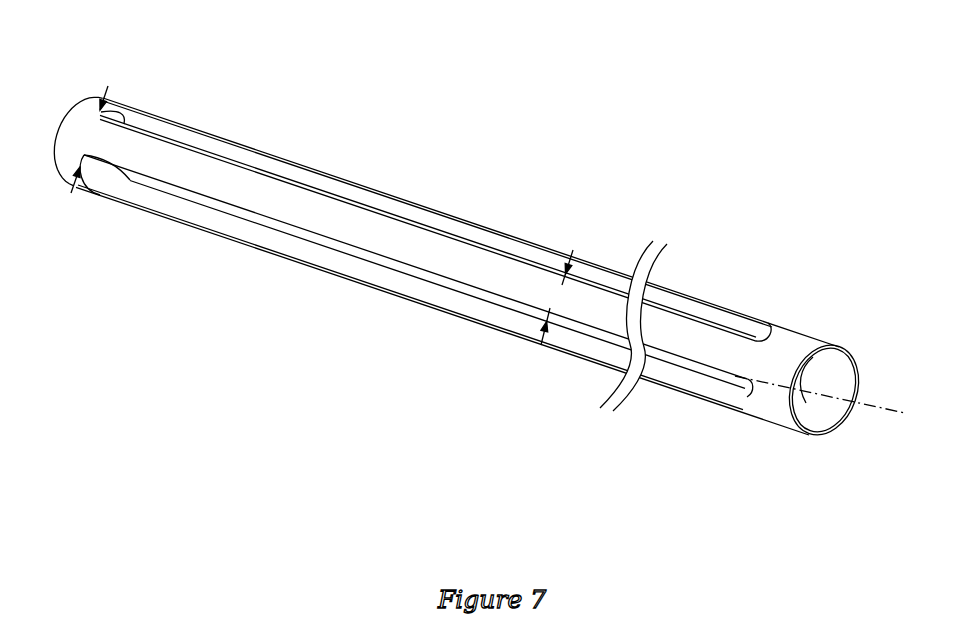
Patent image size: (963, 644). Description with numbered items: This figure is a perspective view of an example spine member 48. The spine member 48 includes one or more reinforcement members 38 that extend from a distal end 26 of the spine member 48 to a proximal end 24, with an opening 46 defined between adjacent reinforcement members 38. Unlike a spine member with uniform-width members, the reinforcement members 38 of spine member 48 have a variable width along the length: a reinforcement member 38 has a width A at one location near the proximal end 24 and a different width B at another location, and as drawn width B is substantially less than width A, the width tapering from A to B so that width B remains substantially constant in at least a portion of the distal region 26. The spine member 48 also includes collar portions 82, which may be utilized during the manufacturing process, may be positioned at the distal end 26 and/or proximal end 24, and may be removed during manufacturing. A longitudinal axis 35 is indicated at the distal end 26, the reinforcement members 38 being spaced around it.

The proximal end 24 is at (147, 78).
The distal end 26 is at (815, 312).
The longitudinal axis 35 is at (877, 405).
The reinforcement member 38 is at (353, 182).
The opening 46 is at (493, 302).
The spine member 48 is at (562, 132).
The collar portion 82 is at (66, 149).